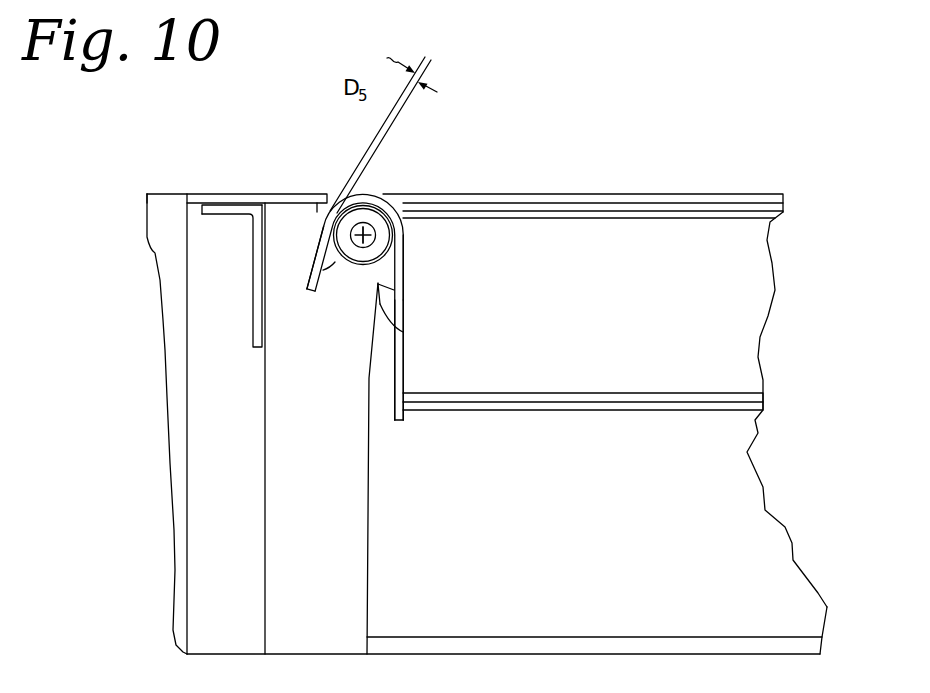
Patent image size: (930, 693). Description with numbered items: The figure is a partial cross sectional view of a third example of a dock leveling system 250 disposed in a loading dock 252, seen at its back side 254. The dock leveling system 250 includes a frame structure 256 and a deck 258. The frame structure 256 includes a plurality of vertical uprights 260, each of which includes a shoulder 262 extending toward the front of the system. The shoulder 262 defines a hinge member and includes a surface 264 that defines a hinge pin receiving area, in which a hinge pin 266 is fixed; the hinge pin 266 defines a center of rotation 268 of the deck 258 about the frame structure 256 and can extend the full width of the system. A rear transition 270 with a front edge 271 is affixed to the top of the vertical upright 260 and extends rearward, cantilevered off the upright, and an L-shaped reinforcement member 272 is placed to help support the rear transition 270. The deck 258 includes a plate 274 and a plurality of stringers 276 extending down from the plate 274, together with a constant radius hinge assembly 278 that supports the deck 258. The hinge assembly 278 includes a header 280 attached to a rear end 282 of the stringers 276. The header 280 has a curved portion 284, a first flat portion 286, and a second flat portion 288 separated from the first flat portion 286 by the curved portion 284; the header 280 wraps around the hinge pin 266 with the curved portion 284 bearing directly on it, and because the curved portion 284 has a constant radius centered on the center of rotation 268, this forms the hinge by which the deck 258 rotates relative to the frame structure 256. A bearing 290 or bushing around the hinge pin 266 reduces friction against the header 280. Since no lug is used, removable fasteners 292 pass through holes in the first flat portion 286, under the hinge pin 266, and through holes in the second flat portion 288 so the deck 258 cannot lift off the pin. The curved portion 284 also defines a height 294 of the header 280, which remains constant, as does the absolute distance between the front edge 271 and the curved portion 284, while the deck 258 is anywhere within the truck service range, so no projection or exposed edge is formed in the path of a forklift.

The dock leveling system 250 is at (771, 99).
The loading dock 252 is at (163, 194).
The back side 254 is at (197, 150).
The frame structure 256 is at (525, 637).
The deck 258 is at (621, 194).
The vertical upright 260 is at (367, 550).
The shoulder 262 is at (370, 377).
The surface 264 is at (363, 236).
The hinge pin 266 is at (345, 267).
The center of rotation 268 is at (328, 270).
The rear transition 270 is at (202, 207).
The front edge 271 is at (334, 204).
The reinforcement member 272 is at (223, 214).
The plate 274 is at (707, 194).
The stringers 276 is at (610, 410).
The constant radius hinge assembly 278 is at (408, 317).
The header 280 is at (405, 267).
The rear end 282 is at (405, 358).
The curved portion 284 is at (384, 197).
The first flat portion 286 is at (323, 226).
The second flat portion 288 is at (405, 380).
The bearing 290 is at (377, 266).
The removable fasteners 292 is at (403, 332).
The height 294 is at (374, 197).